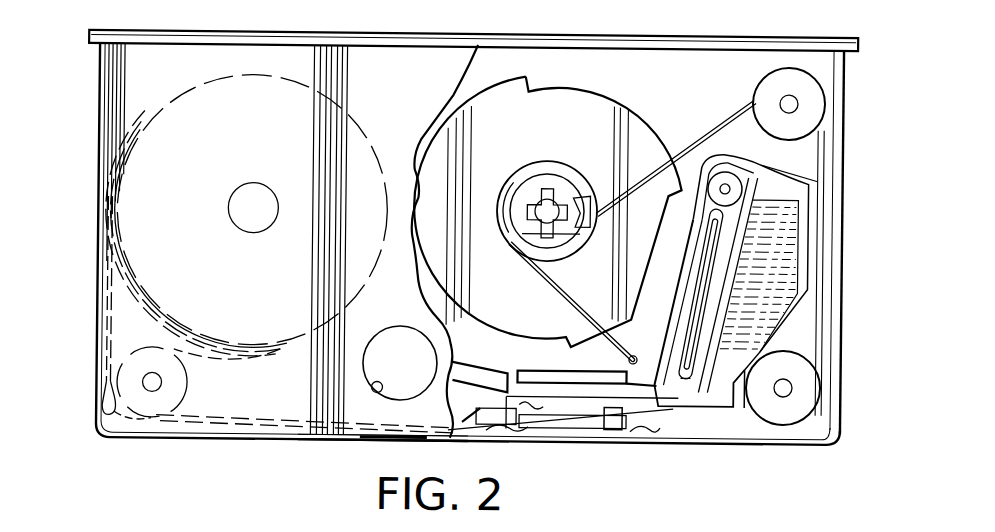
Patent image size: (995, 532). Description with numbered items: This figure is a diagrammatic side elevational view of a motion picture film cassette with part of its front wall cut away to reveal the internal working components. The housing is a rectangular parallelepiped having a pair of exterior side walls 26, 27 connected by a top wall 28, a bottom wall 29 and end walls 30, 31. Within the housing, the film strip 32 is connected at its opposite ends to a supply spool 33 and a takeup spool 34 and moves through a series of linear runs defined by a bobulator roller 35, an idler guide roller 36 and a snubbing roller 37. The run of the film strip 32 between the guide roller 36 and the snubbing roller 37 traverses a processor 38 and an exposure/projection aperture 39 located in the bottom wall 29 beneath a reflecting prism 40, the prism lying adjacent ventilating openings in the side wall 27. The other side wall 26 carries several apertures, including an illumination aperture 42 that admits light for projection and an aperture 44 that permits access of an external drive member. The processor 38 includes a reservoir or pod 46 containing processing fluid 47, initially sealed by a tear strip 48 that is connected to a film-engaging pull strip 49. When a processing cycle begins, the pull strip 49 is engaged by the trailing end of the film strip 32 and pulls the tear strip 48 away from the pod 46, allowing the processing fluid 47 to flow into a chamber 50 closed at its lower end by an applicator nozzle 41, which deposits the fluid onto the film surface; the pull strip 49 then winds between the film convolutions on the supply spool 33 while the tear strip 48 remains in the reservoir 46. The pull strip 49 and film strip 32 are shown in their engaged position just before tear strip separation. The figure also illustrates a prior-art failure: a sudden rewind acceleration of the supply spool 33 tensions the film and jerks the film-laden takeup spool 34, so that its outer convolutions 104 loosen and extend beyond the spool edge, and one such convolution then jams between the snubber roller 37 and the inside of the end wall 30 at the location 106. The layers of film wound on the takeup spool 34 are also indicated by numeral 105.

The exterior side wall 26 is at (142, 77).
The exterior side wall 27 is at (663, 71).
The top wall 28 is at (192, 34).
The bottom wall 29 is at (276, 442).
The end wall 30 is at (98, 325).
The end wall 31 is at (842, 376).
The film strip 32 is at (721, 122).
The supply spool 33 is at (548, 211).
The takeup spool 34 is at (142, 190).
The bobulator roller 35 is at (795, 74).
The idler guide roller 36 is at (786, 422).
The snubbing roller 37 is at (165, 386).
The processor 38 is at (784, 155).
The exposure/projection aperture 39 is at (395, 439).
The reflecting prism 40 is at (415, 367).
The applicator nozzle 41 is at (686, 405).
The illumination aperture 42 is at (377, 392).
The aperture 44 is at (262, 197).
The reservoir or pod 46 is at (803, 228).
The processing fluid 47 is at (757, 257).
The tear strip 48 is at (707, 333).
The pull strip 49 is at (550, 286).
The chamber 50 is at (688, 379).
The loose outer convolutions of film 104 is at (122, 266).
The tape layer 105 is at (128, 236).
The jam of film convolution 106 is at (102, 418).